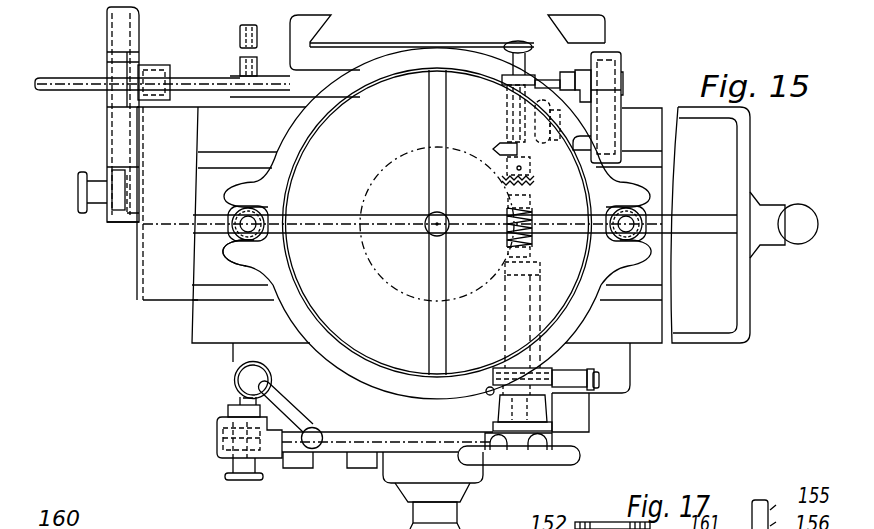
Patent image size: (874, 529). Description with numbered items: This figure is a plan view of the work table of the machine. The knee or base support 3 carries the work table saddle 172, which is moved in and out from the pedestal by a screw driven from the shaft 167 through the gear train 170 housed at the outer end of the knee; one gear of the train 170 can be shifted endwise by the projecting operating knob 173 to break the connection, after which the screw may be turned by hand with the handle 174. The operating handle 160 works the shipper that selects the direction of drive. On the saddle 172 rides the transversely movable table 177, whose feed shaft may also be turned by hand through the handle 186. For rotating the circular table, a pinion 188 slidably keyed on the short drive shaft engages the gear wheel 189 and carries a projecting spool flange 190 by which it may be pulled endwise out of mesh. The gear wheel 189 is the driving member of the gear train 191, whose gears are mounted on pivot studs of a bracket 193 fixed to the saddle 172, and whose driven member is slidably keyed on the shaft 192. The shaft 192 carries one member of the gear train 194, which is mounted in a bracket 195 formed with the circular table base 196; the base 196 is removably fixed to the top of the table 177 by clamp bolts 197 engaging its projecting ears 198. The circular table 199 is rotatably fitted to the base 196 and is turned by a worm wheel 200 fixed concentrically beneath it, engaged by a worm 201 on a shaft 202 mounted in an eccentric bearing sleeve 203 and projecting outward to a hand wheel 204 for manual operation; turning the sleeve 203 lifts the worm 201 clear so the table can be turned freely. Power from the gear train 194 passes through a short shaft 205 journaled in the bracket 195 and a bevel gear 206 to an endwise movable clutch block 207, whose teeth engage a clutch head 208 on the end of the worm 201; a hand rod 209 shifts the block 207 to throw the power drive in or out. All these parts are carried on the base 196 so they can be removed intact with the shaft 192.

The knee or base support 3 is at (310, 43).
The operating handle 160 is at (292, 415).
The shaft 167 is at (236, 394).
The gear train 170 is at (278, 455).
The work table saddle 172 is at (167, 203).
The operating knob 173 is at (247, 452).
The handle 174 is at (441, 490).
The transversely movable table 177 is at (710, 225).
The handle 186 is at (797, 237).
The pinion 188 is at (120, 224).
The gear wheel 189 is at (107, 125).
The spool flange 190 is at (95, 205).
The gear train 191 is at (103, 47).
The shaft 192 is at (200, 85).
The bracket 193 is at (157, 70).
The gear train 194 is at (621, 64).
The bracket 195 is at (573, 75).
The circular table base 196 is at (282, 283).
The clamp bolts 197 is at (243, 229).
The projecting ears 198 is at (245, 258).
The circular table 199 is at (437, 222).
The worm wheel 200 is at (389, 288).
The worm 201 is at (531, 245).
The shaft 202 is at (513, 307).
The eccentric bearing sleeve 203 is at (537, 302).
The hand wheel 204 is at (580, 456).
The short shaft 205 is at (530, 128).
The bevel gear 206 is at (518, 146).
The clutch block 207 is at (577, 143).
The clutch head 208 is at (530, 197).
The hand rod 209 is at (524, 53).